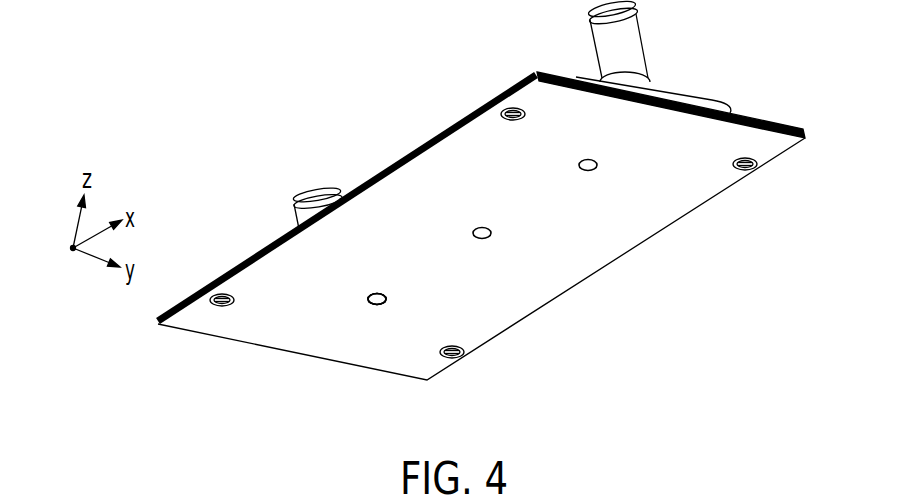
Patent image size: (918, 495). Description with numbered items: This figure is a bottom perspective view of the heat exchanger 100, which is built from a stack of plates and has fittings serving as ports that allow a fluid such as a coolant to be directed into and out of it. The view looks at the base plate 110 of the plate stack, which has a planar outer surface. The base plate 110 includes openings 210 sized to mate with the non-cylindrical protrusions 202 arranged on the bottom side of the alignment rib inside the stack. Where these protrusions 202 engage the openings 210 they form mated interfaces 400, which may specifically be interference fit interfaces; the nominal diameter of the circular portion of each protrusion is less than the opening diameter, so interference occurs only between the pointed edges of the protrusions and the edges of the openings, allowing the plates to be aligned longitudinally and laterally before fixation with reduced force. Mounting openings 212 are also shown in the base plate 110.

The heat exchanger 100 is at (481, 222).
The base plate 110 is at (547, 284).
The non-cylindrical alignment protrusions 202 is at (373, 305).
The openings 210 is at (376, 294).
The mounting openings 212 is at (218, 319).
The mated interfaces 400 is at (383, 318).